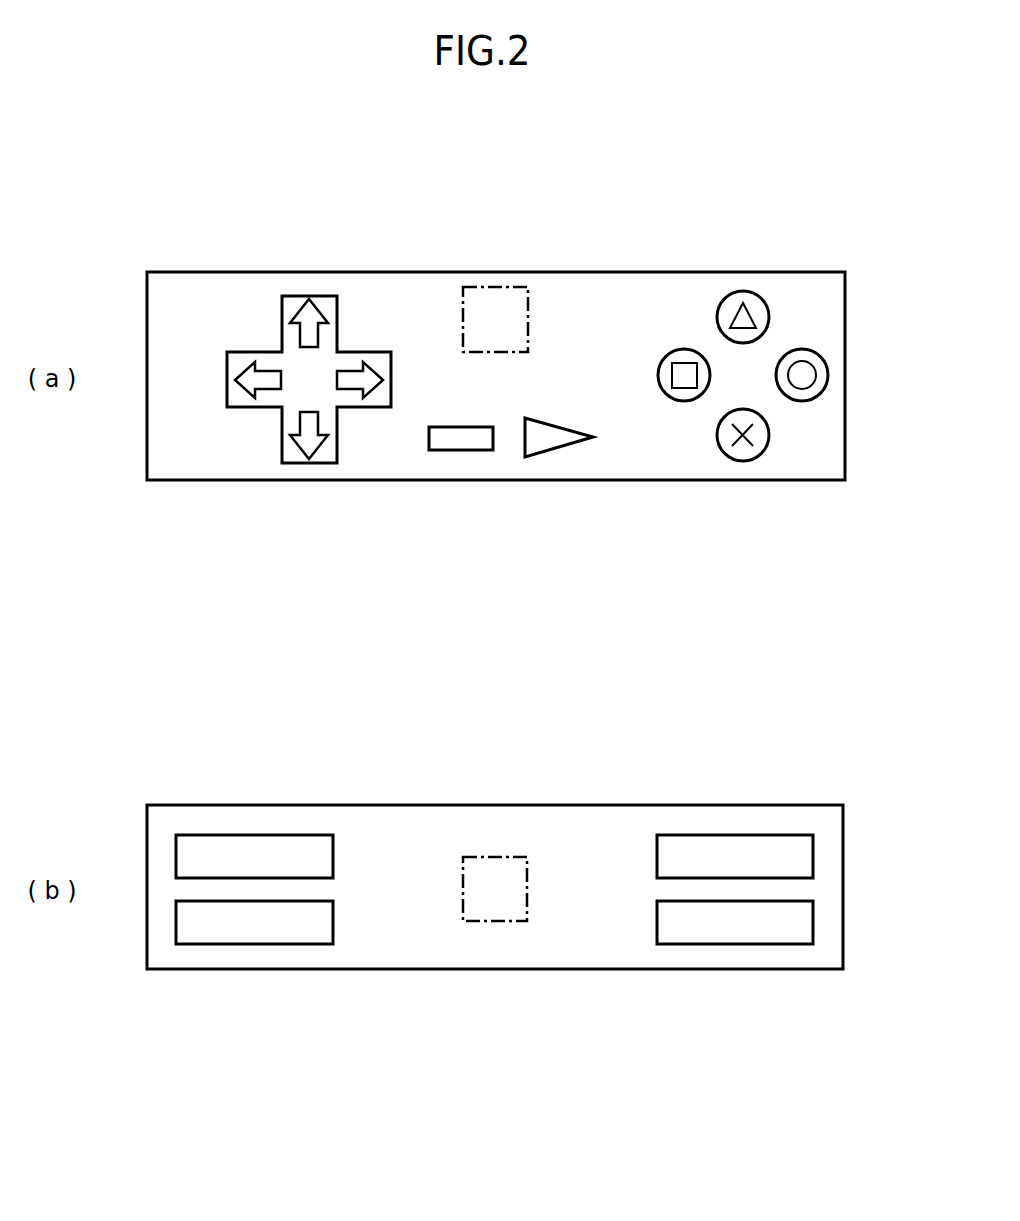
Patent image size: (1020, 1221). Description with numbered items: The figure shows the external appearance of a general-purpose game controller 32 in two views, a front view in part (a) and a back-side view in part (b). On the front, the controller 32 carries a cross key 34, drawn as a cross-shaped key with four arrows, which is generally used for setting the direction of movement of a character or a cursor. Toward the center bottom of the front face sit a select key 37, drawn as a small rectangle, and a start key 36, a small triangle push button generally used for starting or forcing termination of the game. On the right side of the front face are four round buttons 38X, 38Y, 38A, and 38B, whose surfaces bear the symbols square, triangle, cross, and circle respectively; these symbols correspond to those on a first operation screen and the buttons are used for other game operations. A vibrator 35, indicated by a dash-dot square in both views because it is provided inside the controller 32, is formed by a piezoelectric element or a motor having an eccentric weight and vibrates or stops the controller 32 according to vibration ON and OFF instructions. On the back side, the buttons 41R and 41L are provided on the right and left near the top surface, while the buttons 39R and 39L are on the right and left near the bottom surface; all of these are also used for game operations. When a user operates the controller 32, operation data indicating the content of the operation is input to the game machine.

The controller 32 is at (210, 271).
The cross key 34 is at (338, 320).
The vibrator 35 is at (508, 287).
The start key 36 is at (558, 448).
The select key 37 is at (462, 452).
The button 38Y is at (717, 317).
The button 38X is at (658, 376).
The button 38B is at (828, 375).
The button 38A is at (717, 435).
The button 39L is at (255, 834).
The button 39R is at (735, 834).
The button 41L is at (257, 945).
The button 41R is at (740, 945).